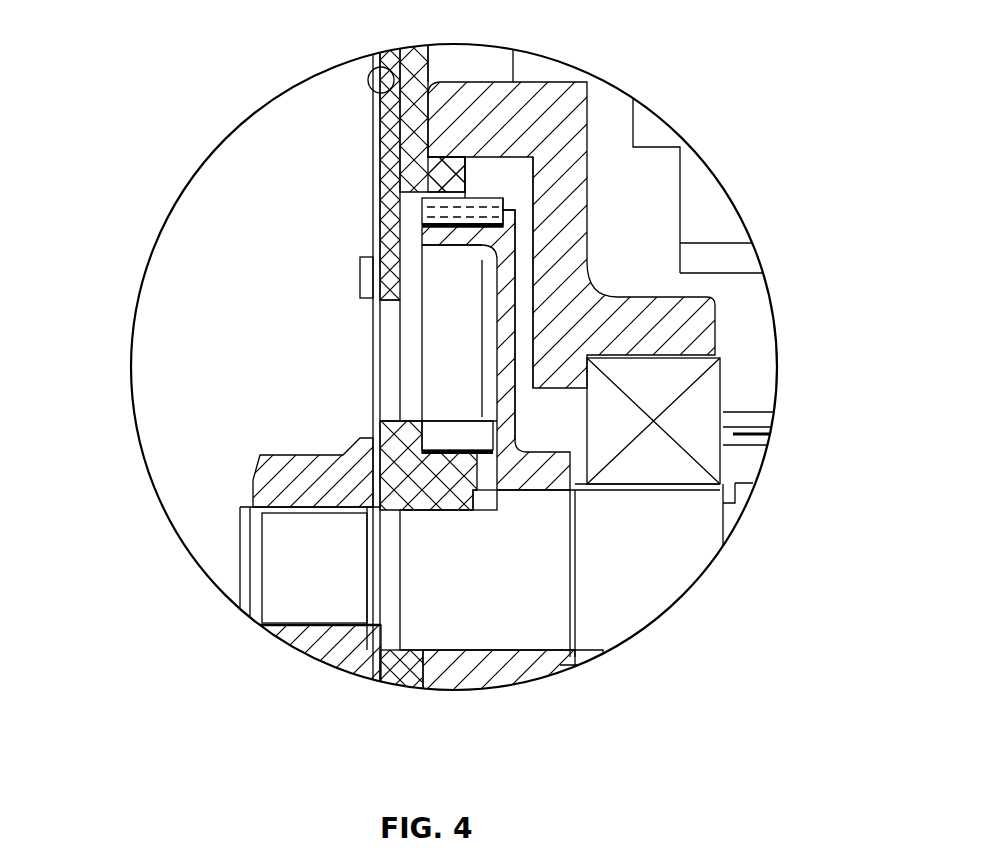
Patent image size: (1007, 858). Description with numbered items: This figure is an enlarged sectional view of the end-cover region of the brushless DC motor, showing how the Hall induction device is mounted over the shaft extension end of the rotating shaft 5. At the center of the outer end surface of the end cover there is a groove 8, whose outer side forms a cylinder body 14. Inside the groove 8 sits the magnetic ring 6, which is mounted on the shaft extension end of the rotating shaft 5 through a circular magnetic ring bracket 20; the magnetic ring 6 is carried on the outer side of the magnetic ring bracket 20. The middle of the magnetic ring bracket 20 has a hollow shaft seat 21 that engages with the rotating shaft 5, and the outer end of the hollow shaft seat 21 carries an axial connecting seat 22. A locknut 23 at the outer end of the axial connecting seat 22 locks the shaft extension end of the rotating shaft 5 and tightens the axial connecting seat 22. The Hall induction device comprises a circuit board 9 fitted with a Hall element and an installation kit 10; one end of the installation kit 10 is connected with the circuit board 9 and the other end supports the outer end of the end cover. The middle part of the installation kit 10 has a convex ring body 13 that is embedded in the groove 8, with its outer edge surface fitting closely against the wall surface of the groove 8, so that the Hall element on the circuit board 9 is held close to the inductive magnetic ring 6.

The rotating shaft 5 is at (313, 573).
The magnetic ring 6 is at (505, 222).
The groove 8 is at (503, 175).
The circuit board 9 is at (387, 181).
The installation kit 10 is at (400, 150).
The convex ring body 13 is at (430, 183).
The cylinder body 14 is at (517, 127).
The magnetic ring bracket 20 is at (503, 320).
The hollow shaft seat 21 is at (460, 438).
The axial connecting seat 22 is at (463, 511).
The locknut 23 is at (267, 490).